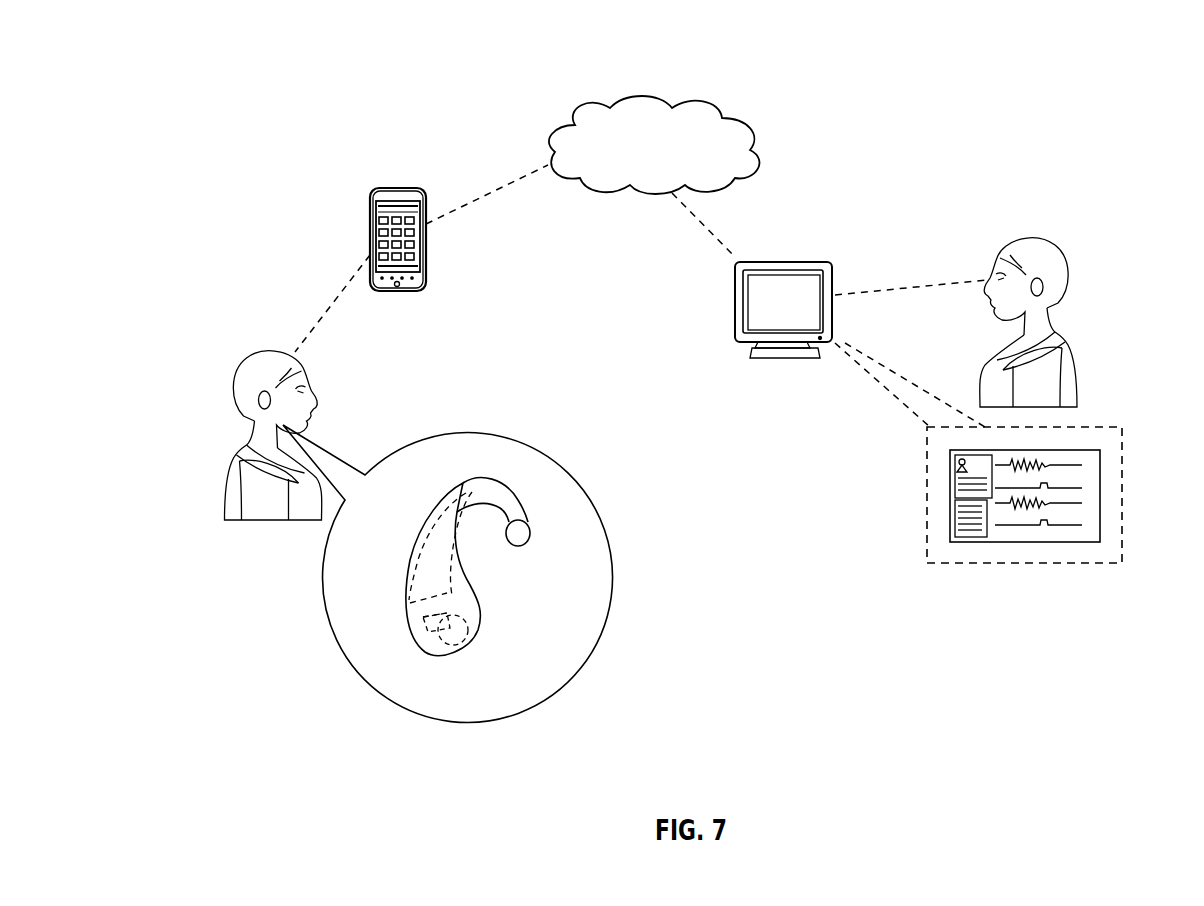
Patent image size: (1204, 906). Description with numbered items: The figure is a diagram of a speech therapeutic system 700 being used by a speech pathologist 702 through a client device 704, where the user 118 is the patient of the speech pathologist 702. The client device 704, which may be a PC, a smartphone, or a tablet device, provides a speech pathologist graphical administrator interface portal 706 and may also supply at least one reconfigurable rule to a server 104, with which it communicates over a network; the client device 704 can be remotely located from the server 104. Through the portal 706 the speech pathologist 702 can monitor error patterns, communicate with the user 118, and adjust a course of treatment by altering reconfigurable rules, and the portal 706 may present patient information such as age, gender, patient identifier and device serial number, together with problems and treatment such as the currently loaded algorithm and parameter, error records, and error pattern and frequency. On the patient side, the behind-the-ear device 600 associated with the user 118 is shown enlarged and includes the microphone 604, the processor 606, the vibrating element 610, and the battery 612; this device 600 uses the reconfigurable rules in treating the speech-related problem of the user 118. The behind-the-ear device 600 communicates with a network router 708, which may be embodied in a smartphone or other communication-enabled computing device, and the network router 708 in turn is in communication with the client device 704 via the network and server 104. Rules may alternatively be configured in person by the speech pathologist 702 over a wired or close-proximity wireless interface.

The speech therapeutic system 700 is at (987, 54).
The network router 708 is at (370, 200).
The server 104 is at (710, 104).
The client device 704 is at (767, 262).
The speech pathologist graphical administrator interface (GAI) portal 706 is at (1102, 492).
The speech pathologist 702 is at (1073, 337).
The user 118 is at (233, 460).
The behind-the-ear device 600 is at (406, 605).
The microphone 604 is at (470, 486).
The processor 606 is at (420, 538).
The vibrating element 610 is at (457, 610).
The battery 612 is at (463, 640).